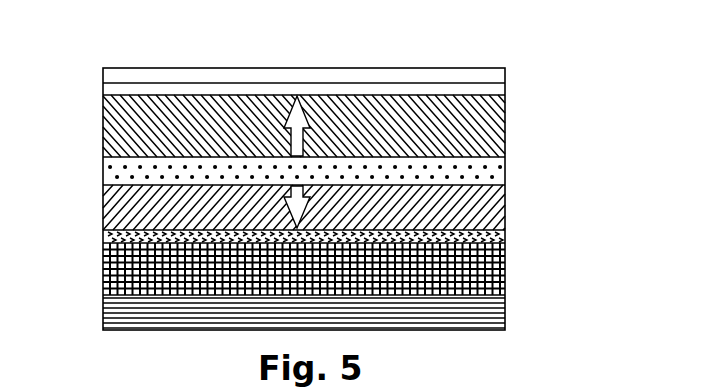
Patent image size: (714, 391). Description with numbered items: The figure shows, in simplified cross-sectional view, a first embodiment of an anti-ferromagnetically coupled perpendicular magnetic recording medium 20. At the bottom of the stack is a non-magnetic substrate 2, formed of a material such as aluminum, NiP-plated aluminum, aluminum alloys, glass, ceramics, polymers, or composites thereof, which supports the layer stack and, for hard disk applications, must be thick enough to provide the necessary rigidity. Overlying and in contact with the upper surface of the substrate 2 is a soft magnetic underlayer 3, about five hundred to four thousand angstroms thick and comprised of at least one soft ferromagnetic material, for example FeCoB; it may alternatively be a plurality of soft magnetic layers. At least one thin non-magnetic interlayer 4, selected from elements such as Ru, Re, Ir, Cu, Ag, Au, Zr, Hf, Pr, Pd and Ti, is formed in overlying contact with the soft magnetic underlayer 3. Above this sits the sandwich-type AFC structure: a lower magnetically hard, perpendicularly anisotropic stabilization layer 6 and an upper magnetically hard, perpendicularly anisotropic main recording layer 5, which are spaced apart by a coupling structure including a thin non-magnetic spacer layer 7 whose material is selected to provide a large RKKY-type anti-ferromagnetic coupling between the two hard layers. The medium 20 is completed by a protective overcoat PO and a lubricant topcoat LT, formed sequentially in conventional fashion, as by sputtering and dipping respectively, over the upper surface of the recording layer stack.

The magnetic recording medium 20 is at (82, 90).
The lubricant topcoat LT is at (511, 75).
The protective overcoat PO is at (511, 85).
The main recording layer 5 is at (511, 125).
The non-magnetic spacer layer 7 is at (511, 168).
The stabilization layer 6 is at (511, 207).
The non-magnetic interlayer 4 is at (511, 235).
The soft magnetic underlayer 3 is at (511, 265).
The non-magnetic substrate 2 is at (511, 307).